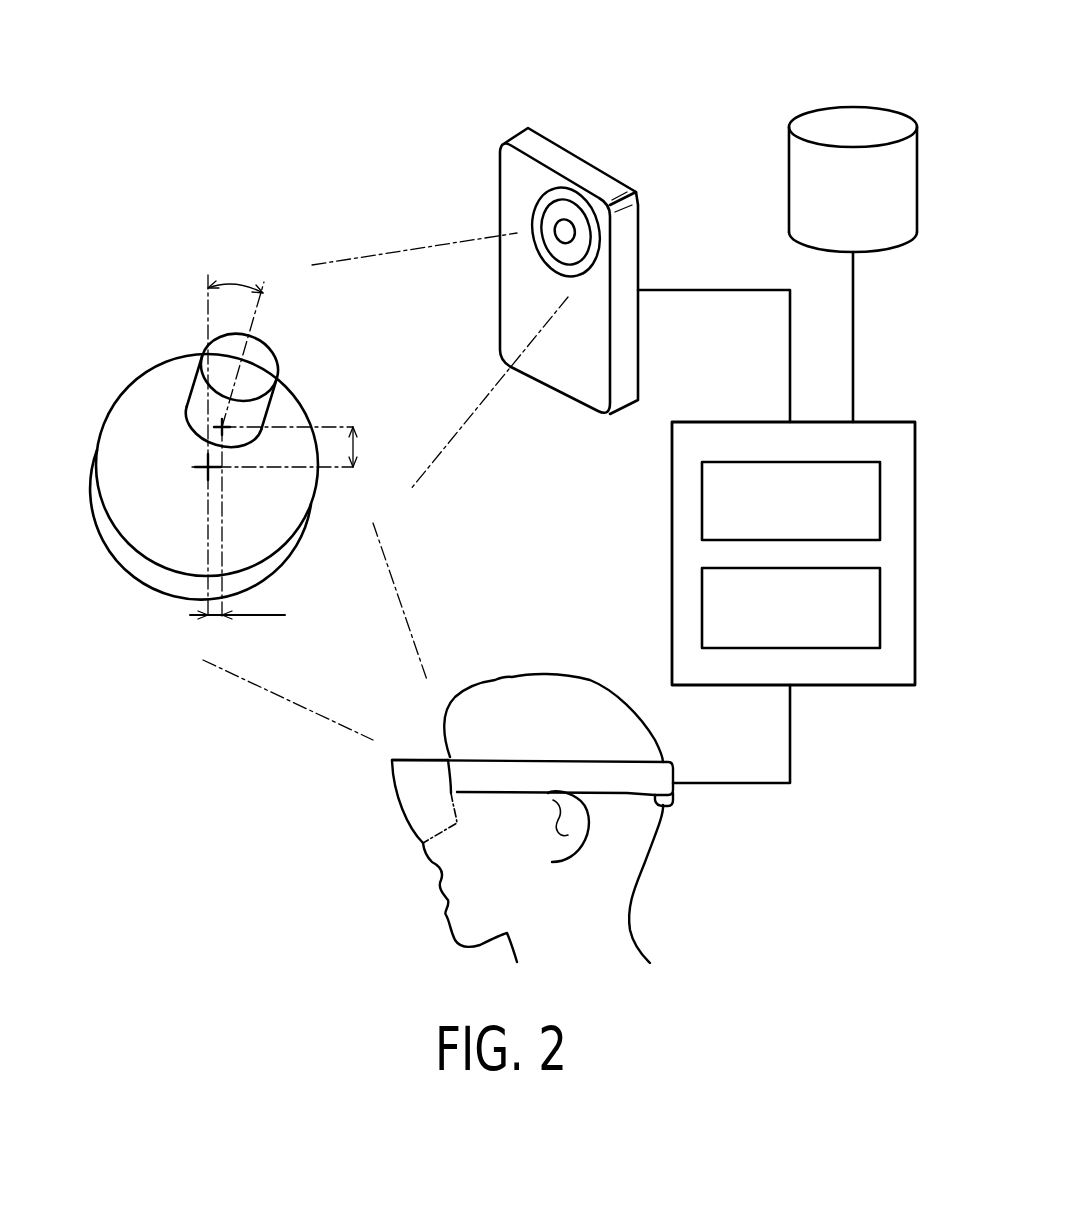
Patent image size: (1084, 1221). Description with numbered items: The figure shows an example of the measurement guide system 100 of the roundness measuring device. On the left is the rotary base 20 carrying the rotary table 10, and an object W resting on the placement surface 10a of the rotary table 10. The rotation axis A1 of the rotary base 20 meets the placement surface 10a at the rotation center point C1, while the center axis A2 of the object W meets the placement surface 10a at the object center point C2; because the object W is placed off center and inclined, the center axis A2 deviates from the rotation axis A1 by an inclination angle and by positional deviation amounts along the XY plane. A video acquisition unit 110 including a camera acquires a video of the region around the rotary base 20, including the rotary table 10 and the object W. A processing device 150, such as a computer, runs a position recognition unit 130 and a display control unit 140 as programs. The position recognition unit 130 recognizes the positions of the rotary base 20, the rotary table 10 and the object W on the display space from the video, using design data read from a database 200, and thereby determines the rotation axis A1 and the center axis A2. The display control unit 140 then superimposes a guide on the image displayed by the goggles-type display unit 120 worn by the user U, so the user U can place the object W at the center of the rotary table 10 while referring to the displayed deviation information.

The rotary table 10 is at (180, 465).
The placement surface 10a is at (118, 480).
The rotary base 20 is at (133, 565).
The object W is at (264, 353).
The rotation axis A1 is at (207, 311).
The center axis A2 is at (258, 300).
The rotation center point C1 is at (213, 470).
The object center point C2 is at (222, 427).
The measurement guide system 100 is at (702, 118).
The video acquisition unit 110 is at (552, 147).
The display unit 120 is at (410, 803).
The position recognition unit 130 is at (880, 480).
The display control unit 140 is at (880, 593).
The processing device 150 is at (816, 521).
The database 200 is at (855, 120).
The user U is at (677, 847).